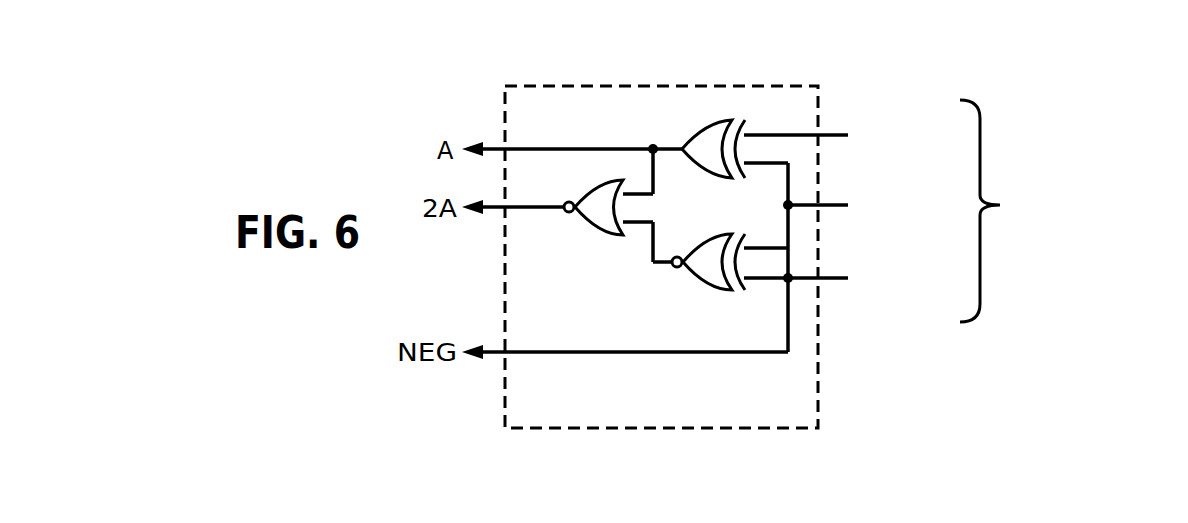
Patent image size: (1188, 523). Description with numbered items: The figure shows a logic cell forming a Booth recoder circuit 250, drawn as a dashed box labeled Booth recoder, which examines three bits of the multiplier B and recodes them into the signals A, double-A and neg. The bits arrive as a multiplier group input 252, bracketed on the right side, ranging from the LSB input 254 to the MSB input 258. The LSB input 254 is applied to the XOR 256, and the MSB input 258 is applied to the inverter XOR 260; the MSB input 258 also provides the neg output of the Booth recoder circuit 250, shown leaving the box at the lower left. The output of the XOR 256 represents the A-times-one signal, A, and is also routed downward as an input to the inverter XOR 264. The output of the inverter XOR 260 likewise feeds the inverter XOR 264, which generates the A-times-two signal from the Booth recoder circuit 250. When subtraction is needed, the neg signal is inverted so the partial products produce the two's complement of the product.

The Booth recoder circuit 250 is at (814, 237).
The multiplier group input 252 is at (1061, 245).
The LSB input 254 is at (917, 100).
The XOR 256 is at (694, 132).
The MSB input 258 is at (899, 318).
The inverter XOR 260 is at (709, 288).
The inverter XOR 264 is at (608, 237).